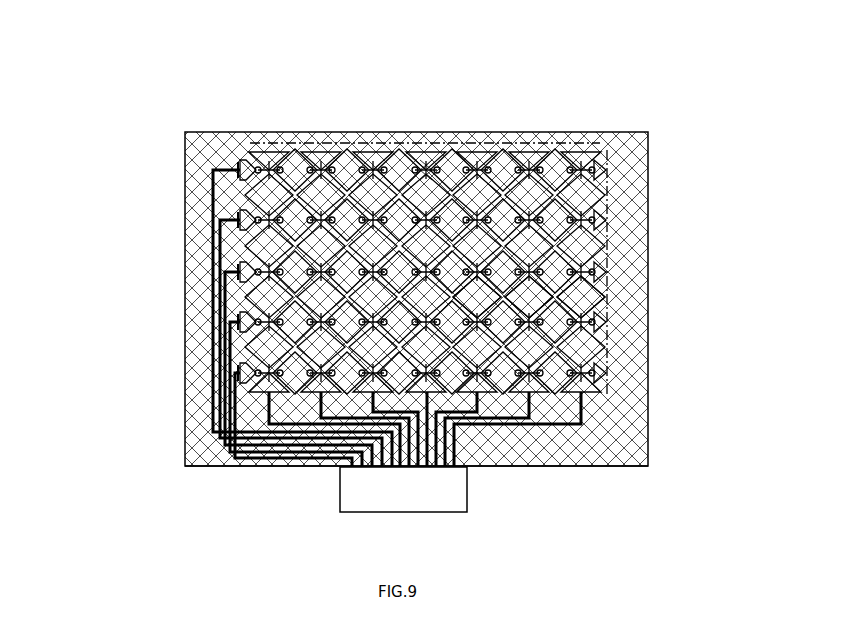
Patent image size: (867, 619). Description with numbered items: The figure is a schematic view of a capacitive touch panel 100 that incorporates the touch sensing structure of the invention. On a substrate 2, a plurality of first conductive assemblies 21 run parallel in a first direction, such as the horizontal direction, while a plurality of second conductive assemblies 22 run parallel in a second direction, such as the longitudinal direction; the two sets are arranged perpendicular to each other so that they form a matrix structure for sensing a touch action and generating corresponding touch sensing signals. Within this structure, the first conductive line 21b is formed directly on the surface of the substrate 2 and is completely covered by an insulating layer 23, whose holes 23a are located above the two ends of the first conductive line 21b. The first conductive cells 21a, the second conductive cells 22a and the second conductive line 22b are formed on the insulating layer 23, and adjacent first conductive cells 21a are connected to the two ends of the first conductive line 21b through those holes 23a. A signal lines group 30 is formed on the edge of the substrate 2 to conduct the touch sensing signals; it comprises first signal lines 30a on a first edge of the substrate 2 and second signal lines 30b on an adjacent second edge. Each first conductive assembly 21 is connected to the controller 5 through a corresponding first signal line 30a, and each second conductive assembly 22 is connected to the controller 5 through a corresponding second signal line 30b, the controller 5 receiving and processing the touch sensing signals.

The capacitive touch panel 100 is at (203, 125).
The substrate 2 is at (583, 466).
The controller 5 is at (403, 489).
The first conductive assemblies 21 is at (603, 215).
The first conductive cells 21a is at (236, 302).
The first conductive line 21b is at (578, 157).
The second conductive assemblies 22 is at (373, 150).
The second conductive cells 22a is at (582, 297).
The second conductive line 22b is at (607, 370).
The insulating layer 23 is at (245, 142).
The holes 23a is at (488, 157).
The signal lines group 30 is at (315, 351).
The first signal lines 30a is at (203, 390).
The second signal lines 30b is at (320, 463).